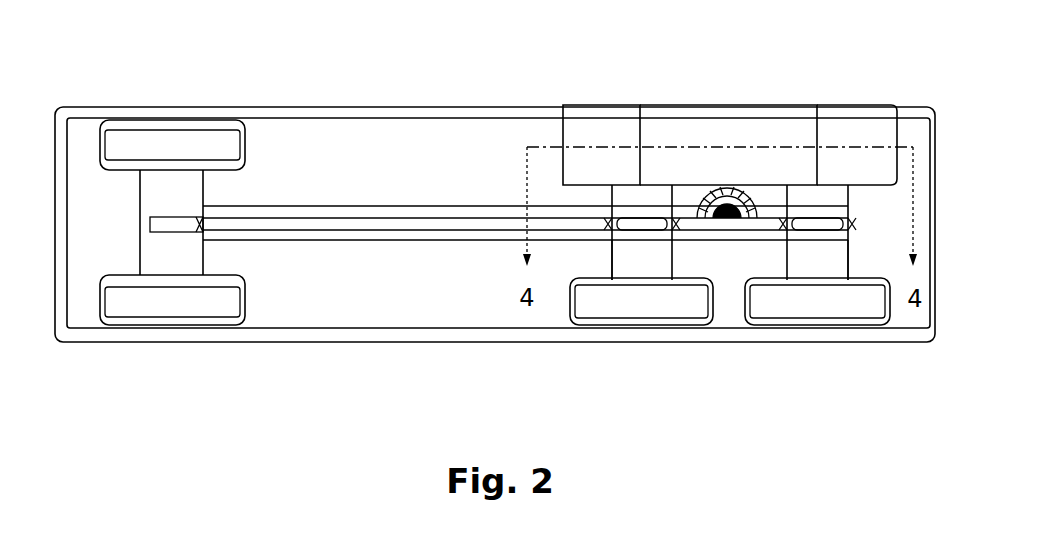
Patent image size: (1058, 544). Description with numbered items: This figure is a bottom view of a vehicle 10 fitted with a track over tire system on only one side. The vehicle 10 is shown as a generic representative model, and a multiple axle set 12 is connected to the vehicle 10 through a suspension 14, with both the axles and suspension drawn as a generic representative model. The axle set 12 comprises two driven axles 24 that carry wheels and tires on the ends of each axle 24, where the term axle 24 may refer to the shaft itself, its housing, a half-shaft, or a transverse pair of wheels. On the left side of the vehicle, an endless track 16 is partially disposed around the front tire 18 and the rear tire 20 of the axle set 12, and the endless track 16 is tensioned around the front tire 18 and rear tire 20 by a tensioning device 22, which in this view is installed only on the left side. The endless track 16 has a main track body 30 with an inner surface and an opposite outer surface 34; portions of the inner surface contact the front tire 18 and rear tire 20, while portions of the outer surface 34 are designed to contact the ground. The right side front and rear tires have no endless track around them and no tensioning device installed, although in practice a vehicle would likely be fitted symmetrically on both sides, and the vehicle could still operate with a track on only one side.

The vehicle 10 is at (435, 107).
The multiple axle set 12 is at (800, 260).
The suspension 14 is at (640, 262).
The endless track 16 is at (605, 128).
The front tire 18 is at (647, 305).
The rear tire 20 is at (807, 305).
The tensioning device 22 is at (728, 186).
The driven axle 24 is at (628, 237).
The main track body 30 is at (748, 120).
The outer surface 34 is at (852, 120).